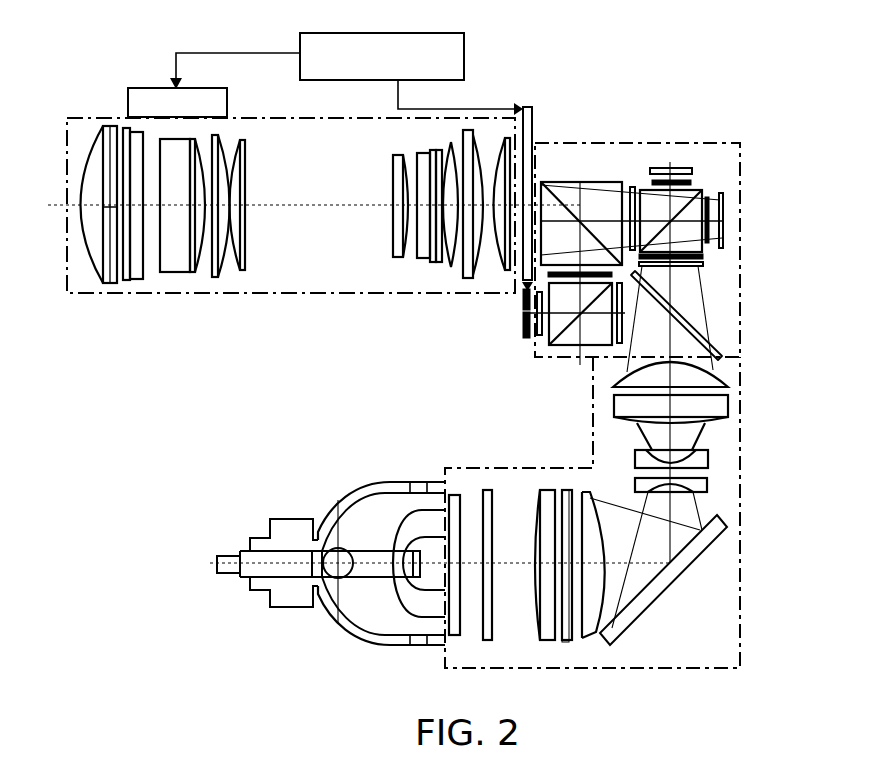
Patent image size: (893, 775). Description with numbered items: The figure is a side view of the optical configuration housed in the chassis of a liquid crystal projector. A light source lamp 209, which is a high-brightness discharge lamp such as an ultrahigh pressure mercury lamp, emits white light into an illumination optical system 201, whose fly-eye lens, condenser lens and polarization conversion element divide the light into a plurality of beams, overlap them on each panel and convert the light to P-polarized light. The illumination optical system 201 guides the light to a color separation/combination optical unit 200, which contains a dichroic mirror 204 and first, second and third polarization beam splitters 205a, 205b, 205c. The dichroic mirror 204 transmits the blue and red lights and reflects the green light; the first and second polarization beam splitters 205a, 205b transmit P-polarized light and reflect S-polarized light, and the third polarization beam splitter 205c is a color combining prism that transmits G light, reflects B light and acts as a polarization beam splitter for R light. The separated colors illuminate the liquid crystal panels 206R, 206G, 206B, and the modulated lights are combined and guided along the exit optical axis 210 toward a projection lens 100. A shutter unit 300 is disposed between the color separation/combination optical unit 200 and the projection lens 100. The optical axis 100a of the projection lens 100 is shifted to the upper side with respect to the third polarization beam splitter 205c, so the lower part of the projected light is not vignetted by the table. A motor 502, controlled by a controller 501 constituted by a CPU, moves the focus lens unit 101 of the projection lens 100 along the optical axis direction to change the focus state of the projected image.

The projection lens 100 is at (291, 238).
The optical axis of the projection lens 100a is at (545, 205).
The focus lens unit 101 is at (112, 285).
The color separation/combination optical unit 200 is at (743, 333).
The illumination optical system 201 is at (607, 668).
The dichroic mirror 204 is at (718, 345).
The first polarization beam splitter 205a is at (572, 335).
The second polarization beam splitter 205b is at (690, 215).
The third polarization beam splitter 205c is at (598, 215).
The liquid crystal panel 206B is at (655, 166).
The liquid crystal panel 206G is at (525, 335).
The liquid crystal panel 206R is at (723, 212).
The light source lamp 209 is at (358, 588).
The exit optical axis 210 is at (520, 300).
The shutter unit 300 is at (532, 106).
The controller 501 is at (466, 57).
The motor 502 is at (247, 92).